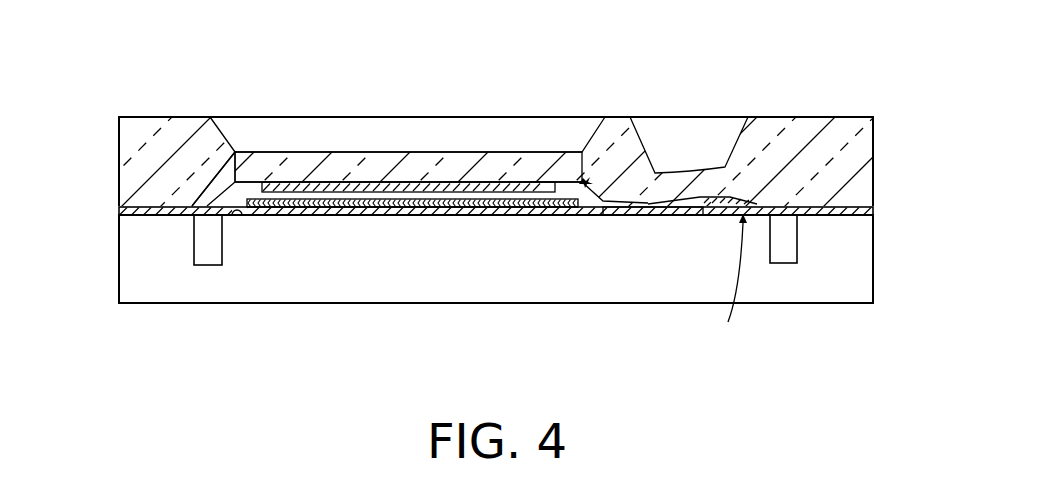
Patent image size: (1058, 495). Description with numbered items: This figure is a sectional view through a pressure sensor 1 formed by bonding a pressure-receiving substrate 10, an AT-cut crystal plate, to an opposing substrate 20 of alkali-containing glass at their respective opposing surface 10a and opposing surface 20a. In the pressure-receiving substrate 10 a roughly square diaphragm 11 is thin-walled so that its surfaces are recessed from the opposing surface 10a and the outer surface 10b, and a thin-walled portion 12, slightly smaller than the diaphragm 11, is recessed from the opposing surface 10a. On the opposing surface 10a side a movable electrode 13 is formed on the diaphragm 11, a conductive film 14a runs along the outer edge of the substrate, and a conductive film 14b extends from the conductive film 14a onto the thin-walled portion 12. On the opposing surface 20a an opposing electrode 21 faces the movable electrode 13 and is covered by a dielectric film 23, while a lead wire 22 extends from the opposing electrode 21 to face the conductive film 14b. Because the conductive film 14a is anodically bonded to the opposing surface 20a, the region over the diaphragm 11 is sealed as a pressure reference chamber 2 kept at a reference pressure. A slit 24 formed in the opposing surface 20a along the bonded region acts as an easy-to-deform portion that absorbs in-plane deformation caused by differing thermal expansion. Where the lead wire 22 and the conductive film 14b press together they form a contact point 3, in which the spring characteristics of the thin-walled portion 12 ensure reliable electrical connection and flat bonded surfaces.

The pressure sensor 1 is at (903, 66).
The pressure reference chamber 2 is at (586, 181).
The contact point 3 is at (732, 284).
The pressure-receiving substrate 10 is at (873, 162).
The opposing surface 10a is at (192, 206).
The outer surface 10b is at (842, 117).
The diaphragm 11 is at (488, 168).
The thin-walled portion 12 is at (677, 178).
The movable electrode 13 is at (386, 185).
The conductive film 14a is at (119, 211).
The conductive film 14b is at (710, 197).
The opposing substrate 20 is at (865, 277).
The opposing surface 20a is at (240, 215).
The opposing electrode 21 is at (377, 213).
The lead wire 22 is at (653, 214).
The dielectric film 23 is at (483, 205).
The slit 24 is at (200, 250).